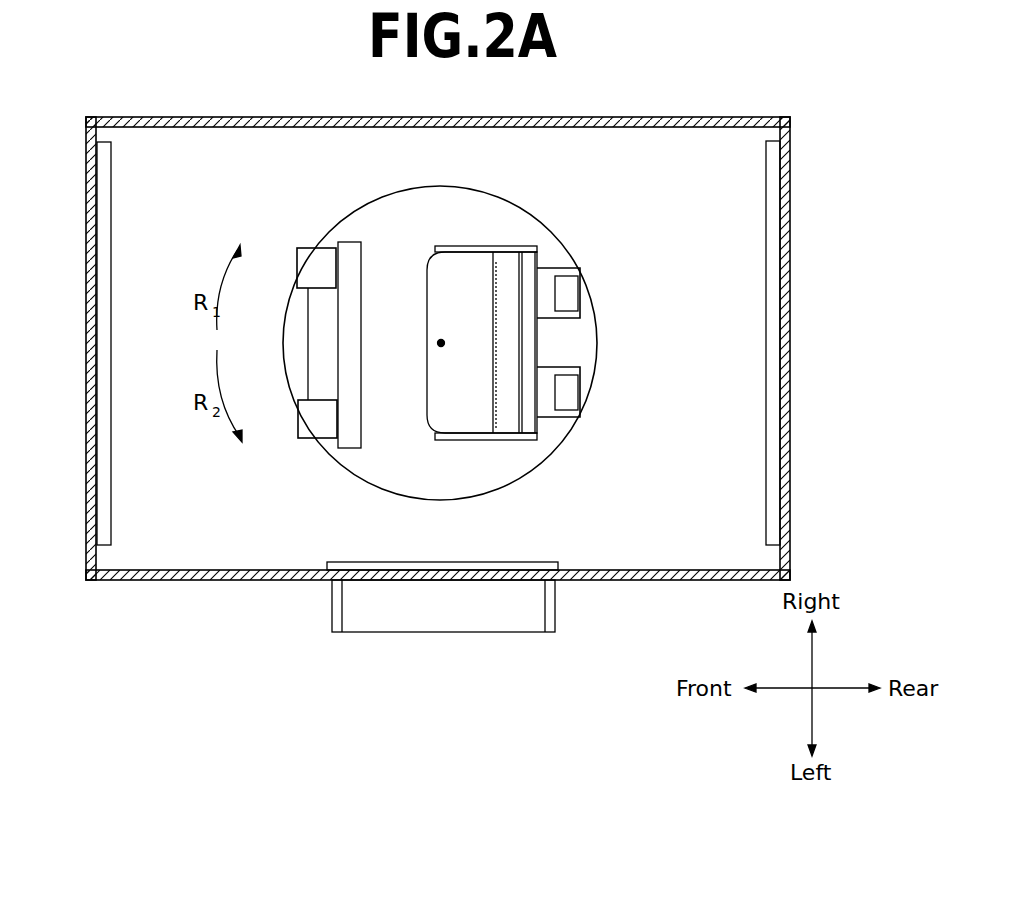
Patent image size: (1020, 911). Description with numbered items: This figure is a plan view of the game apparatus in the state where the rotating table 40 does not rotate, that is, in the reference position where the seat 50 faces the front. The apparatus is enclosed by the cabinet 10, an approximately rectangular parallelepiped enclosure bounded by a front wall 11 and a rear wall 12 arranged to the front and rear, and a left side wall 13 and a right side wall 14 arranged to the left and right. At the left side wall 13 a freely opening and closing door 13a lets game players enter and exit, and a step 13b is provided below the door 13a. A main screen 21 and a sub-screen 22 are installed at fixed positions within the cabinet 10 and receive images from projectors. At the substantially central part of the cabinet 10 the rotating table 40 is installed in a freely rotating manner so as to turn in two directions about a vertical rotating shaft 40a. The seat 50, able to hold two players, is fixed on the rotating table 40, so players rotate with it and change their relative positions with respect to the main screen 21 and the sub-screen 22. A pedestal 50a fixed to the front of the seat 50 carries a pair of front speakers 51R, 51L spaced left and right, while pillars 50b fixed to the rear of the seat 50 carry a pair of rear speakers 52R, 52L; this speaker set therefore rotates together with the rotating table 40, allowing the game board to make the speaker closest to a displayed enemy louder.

The cabinet 10 is at (645, 582).
The front wall 11 is at (85, 483).
The rear wall 12 is at (793, 478).
The left side wall 13 is at (393, 633).
The door 13a is at (498, 565).
The step 13b is at (405, 602).
The right side wall 14 is at (522, 117).
The main screen 21 is at (105, 262).
The sub-screen 22 is at (772, 250).
The rotating table 40 is at (598, 344).
The rotating shaft 40a is at (441, 343).
The seat 50 is at (463, 420).
The pedestal 50a is at (325, 343).
The pillars 50b is at (550, 272).
The front speaker 51R is at (315, 262).
The front speaker 51L is at (308, 428).
The rear speaker 52R is at (570, 294).
The rear speaker 52L is at (572, 392).